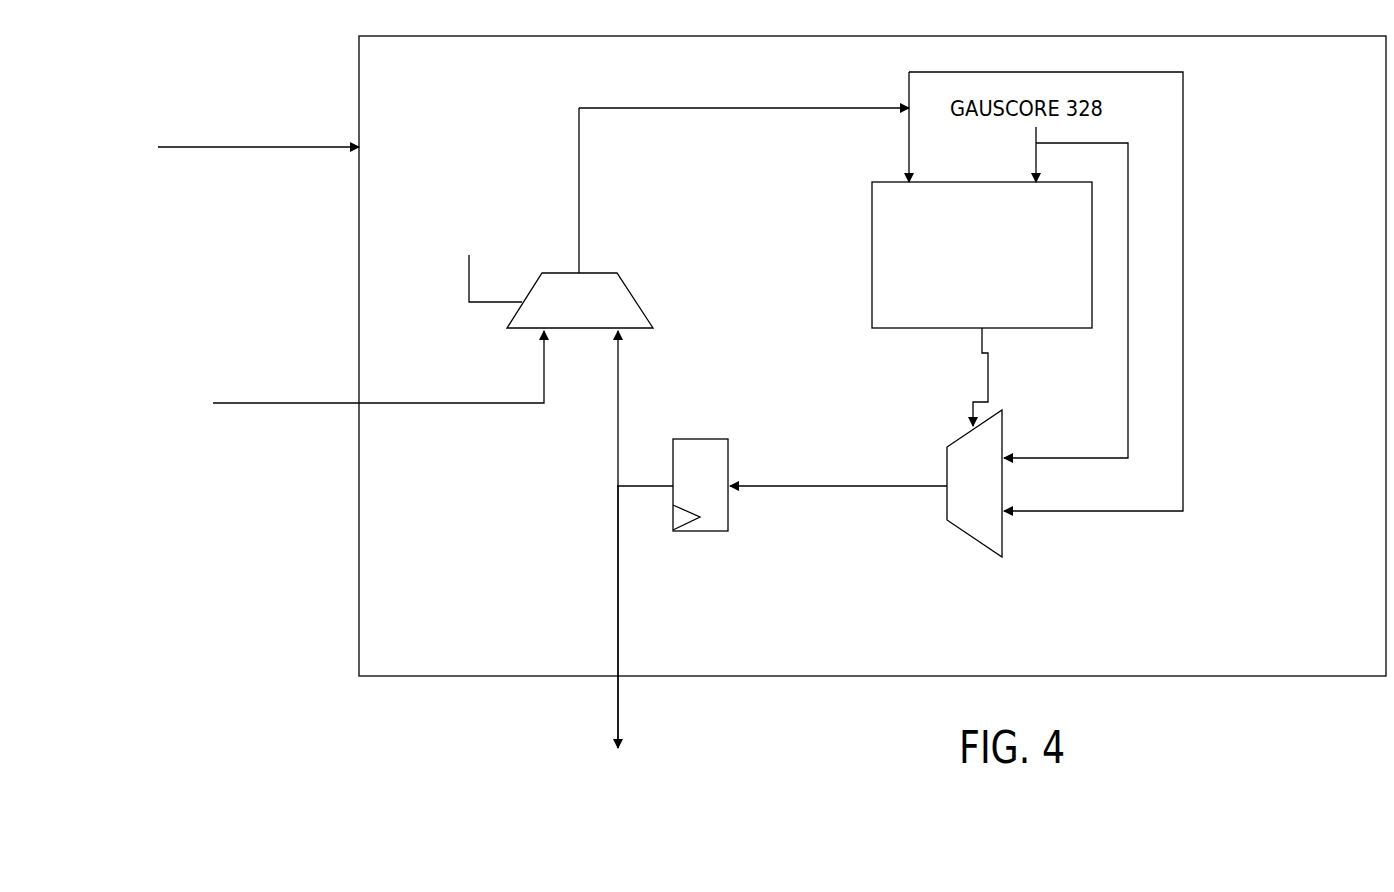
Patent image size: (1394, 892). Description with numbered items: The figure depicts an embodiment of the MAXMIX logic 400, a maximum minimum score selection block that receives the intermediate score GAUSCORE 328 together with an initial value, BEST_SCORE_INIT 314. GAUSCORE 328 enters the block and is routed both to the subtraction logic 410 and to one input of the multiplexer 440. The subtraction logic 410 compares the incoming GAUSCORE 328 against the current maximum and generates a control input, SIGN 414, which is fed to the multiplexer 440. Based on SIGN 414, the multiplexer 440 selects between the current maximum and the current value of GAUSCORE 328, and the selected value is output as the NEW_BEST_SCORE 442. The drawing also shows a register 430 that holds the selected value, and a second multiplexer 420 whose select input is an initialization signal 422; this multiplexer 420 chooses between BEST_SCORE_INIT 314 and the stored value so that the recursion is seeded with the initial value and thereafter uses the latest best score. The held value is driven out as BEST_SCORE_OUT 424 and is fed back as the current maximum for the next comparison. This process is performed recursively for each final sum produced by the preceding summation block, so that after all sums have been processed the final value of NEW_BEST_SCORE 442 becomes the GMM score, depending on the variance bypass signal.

The MAXMIX logic 400 is at (1350, 650).
The GAUSCORE 328 is at (238, 148).
The subtraction logic 410 is at (965, 280).
The SIGN 414 is at (994, 373).
The multiplexer 440 is at (975, 538).
The NEW_BEST_SCORE 442 is at (828, 487).
The register 430 is at (683, 469).
The multiplexer 420 is at (638, 300).
The initialization signal 422 is at (500, 303).
The BEST_SCORE_INIT 314 is at (256, 404).
The best score out signal 424 is at (620, 708).